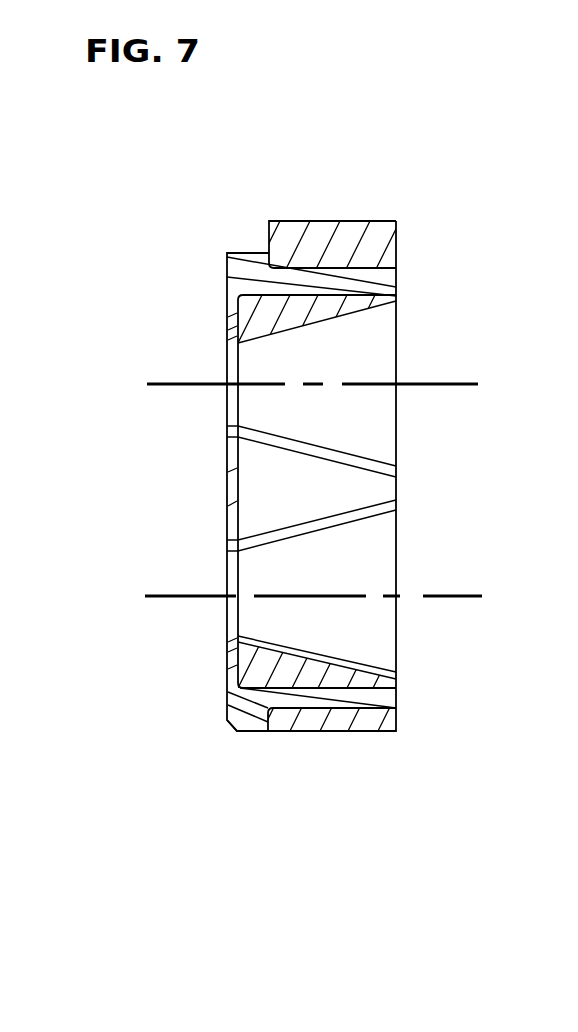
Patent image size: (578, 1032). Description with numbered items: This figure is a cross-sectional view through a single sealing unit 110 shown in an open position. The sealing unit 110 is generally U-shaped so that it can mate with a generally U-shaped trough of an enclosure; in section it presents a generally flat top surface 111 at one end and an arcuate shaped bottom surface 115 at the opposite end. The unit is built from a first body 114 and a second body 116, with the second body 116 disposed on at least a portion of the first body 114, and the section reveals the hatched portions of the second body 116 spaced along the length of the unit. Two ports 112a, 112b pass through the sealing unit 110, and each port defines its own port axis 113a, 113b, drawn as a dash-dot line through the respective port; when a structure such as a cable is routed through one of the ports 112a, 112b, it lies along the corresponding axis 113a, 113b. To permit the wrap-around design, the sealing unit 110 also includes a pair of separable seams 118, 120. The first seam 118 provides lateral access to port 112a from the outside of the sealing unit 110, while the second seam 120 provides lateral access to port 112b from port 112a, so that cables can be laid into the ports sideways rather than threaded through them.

The sealing unit 110 is at (382, 812).
The top surface 111 is at (327, 218).
The port 112a is at (355, 335).
The port 112b is at (342, 562).
The port axis 113a is at (452, 384).
The port axis 113b is at (462, 594).
The first body 114 is at (253, 260).
The bottom surface 115 is at (292, 747).
The second body 116 is at (363, 232).
The first seam 118 is at (385, 722).
The second seam 120 is at (277, 498).